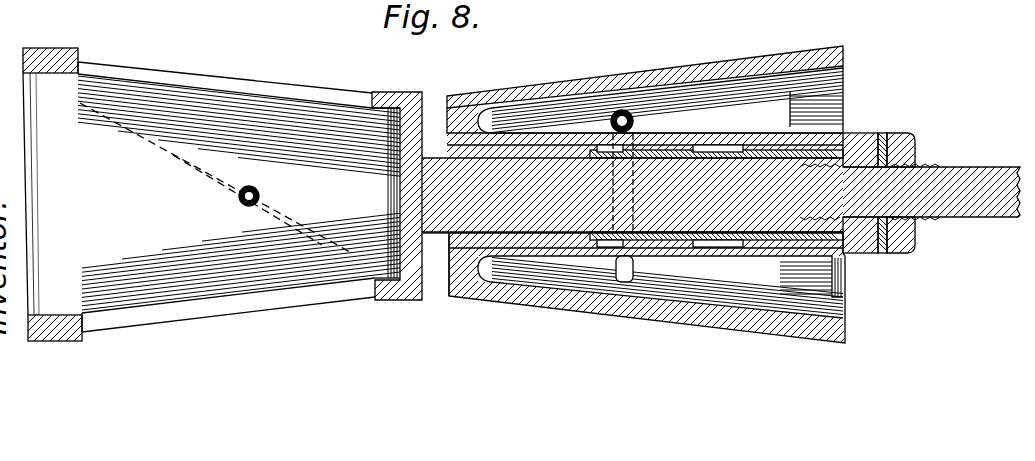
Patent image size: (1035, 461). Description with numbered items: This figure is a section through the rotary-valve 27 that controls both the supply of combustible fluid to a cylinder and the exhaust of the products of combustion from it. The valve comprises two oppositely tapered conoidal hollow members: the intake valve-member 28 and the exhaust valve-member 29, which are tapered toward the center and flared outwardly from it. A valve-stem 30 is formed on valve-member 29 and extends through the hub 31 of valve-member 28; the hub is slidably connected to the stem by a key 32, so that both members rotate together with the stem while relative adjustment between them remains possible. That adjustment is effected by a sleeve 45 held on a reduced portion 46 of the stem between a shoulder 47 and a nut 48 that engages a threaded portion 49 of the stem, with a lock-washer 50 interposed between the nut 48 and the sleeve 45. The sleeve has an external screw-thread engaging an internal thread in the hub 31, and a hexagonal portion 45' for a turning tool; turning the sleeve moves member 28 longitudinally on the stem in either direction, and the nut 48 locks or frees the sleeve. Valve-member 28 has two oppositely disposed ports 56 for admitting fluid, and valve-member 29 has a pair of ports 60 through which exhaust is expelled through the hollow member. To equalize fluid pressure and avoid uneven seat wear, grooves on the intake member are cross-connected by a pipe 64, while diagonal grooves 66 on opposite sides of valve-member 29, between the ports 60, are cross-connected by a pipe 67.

The rotary-valve 27 is at (420, 180).
The valve-member 28 is at (645, 87).
The valve-member 29 is at (211, 191).
The valve-stem 30 is at (528, 290).
The hub 31 is at (553, 298).
The key 32 is at (448, 298).
The sleeve 45 is at (645, 251).
The hexagonal portion 45' is at (863, 171).
The reduced portion 46 is at (717, 255).
The shoulder 47 is at (590, 250).
The nut 48 is at (906, 134).
The threaded portion 49 is at (928, 167).
The lock-washer 50 is at (884, 133).
The ports 56 is at (660, 100).
The ports 60 is at (271, 90).
The pipe 64 is at (622, 110).
The diagonal grooves 66 is at (173, 155).
The pipe 67 is at (240, 204).